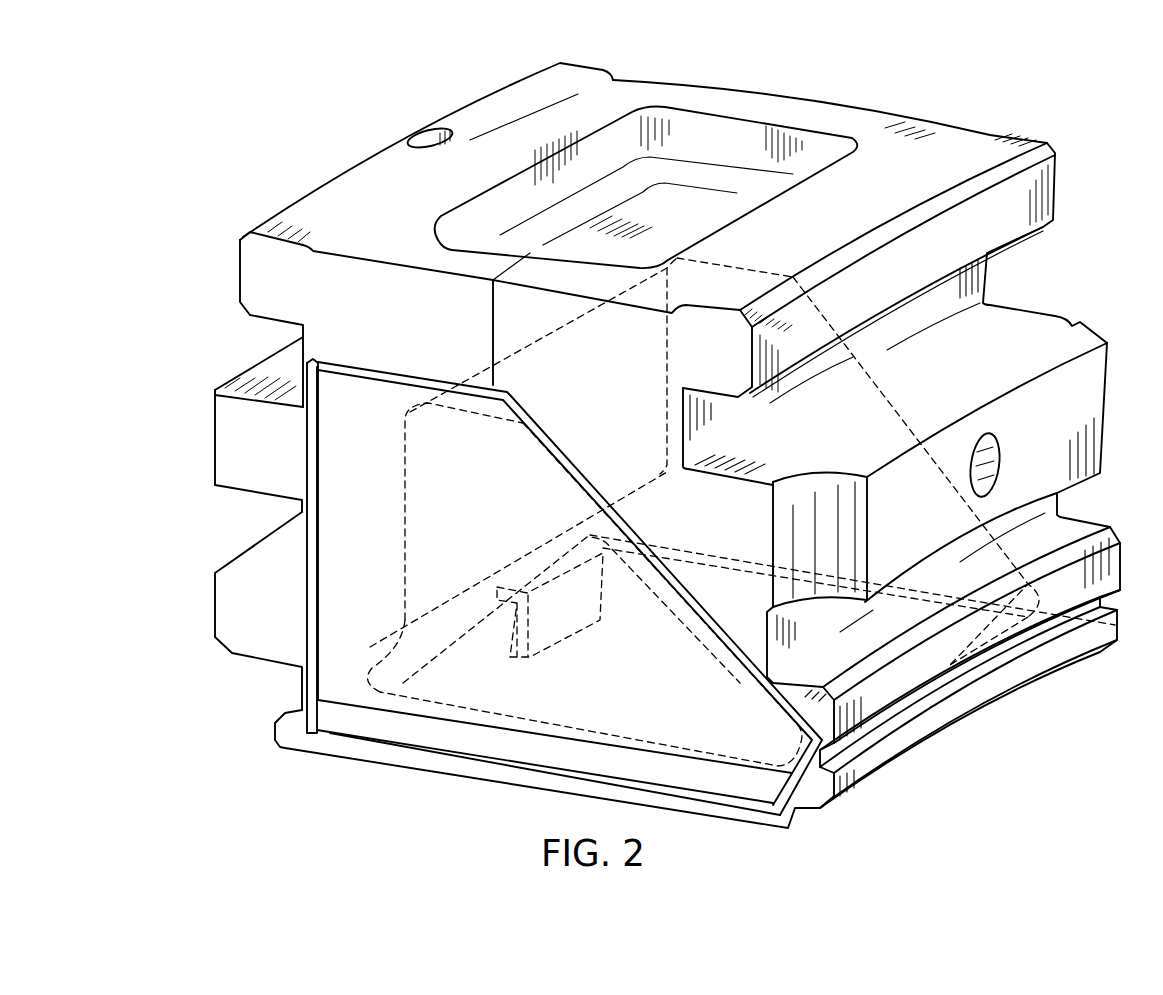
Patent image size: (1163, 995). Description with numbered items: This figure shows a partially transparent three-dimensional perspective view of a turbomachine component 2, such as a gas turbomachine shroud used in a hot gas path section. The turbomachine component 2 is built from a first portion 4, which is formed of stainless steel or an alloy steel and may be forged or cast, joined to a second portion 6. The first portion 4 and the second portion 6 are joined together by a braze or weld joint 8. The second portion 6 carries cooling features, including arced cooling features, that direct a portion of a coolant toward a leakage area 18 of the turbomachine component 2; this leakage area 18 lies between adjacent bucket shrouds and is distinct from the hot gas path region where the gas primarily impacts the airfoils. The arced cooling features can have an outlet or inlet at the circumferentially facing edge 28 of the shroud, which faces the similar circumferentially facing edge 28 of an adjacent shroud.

The turbomachine component 2 is at (270, 118).
The first portion 4 is at (1083, 257).
The second portion 6 is at (618, 773).
The braze or weld joint 8 is at (958, 697).
The leakage area 18 is at (442, 821).
The circumferentially facing edge 28 is at (330, 735).